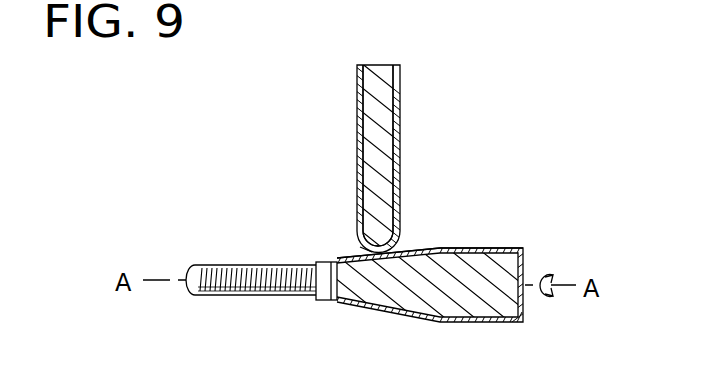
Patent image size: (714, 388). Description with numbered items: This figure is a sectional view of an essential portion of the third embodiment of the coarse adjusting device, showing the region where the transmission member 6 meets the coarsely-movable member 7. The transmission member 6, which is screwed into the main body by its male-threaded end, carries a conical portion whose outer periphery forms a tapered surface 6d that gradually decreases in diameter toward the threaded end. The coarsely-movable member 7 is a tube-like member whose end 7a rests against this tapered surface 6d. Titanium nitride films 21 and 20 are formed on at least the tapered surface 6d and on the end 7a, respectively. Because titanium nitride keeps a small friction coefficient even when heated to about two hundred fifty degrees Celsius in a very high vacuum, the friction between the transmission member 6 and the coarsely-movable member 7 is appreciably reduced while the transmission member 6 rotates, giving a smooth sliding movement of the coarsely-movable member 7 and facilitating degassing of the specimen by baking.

The transmission member 6 is at (522, 247).
The tapered surface 6d is at (330, 306).
The coarsely-movable member 7 is at (401, 87).
The end of the coarsely-movable member 7a is at (372, 251).
The titanium nitride film 20 is at (401, 140).
The titanium nitride film 21 is at (426, 248).